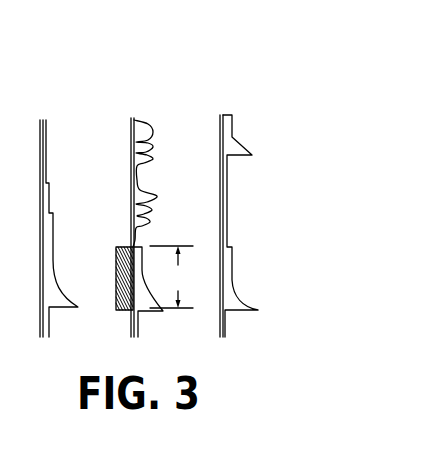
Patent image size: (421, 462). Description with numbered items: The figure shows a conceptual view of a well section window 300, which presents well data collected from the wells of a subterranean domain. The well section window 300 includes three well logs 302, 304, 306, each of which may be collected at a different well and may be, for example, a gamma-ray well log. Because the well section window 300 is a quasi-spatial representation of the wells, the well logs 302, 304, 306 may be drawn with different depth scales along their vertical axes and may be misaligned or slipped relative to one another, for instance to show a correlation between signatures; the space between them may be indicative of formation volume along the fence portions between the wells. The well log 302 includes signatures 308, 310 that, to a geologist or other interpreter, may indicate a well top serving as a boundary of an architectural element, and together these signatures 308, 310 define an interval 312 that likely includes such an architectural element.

The well section window 300 is at (245, 38).
The well log 302 is at (153, 111).
The well log 304 is at (243, 110).
The well log 306 is at (63, 112).
The signature 308 is at (137, 246).
The signature 310 is at (163, 312).
The interval 312 is at (171, 277).